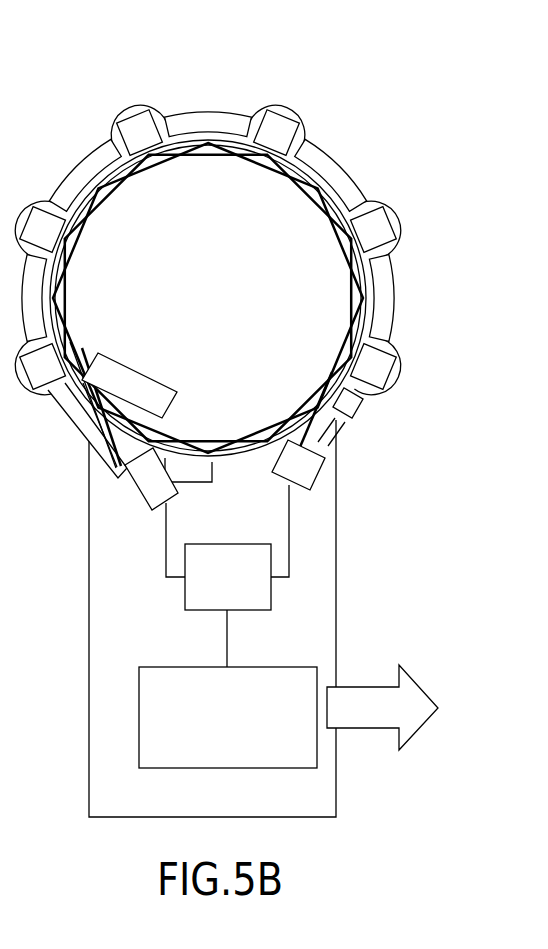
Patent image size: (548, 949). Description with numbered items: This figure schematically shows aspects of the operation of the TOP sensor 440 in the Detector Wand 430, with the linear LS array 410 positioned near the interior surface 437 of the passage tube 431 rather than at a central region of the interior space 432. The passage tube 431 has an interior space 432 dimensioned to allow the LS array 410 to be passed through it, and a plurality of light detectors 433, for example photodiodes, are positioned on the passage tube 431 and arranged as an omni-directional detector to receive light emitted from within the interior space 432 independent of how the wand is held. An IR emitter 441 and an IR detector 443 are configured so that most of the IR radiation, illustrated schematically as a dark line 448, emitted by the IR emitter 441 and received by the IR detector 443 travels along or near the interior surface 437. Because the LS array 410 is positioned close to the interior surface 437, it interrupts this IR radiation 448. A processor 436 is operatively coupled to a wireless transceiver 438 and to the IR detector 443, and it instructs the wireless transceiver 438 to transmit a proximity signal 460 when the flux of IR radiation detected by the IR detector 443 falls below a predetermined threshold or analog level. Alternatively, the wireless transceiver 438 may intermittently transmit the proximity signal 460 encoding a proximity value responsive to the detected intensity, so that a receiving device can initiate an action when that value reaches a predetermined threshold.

The linear LS array 410 is at (143, 352).
The detector wand 430 is at (72, 678).
The passage tube 431 is at (208, 203).
The interior space 432 is at (204, 238).
The light detectors 433 is at (307, 128).
The processor 436 is at (255, 590).
The interior surface 437 is at (178, 424).
The wireless transceiver 438 is at (200, 667).
The TOP sensor 440 is at (78, 152).
The IR emitter 441 is at (137, 477).
The IR detector 443 is at (322, 467).
The IR radiation 448 is at (73, 403).
The proximity signal 460 is at (352, 719).